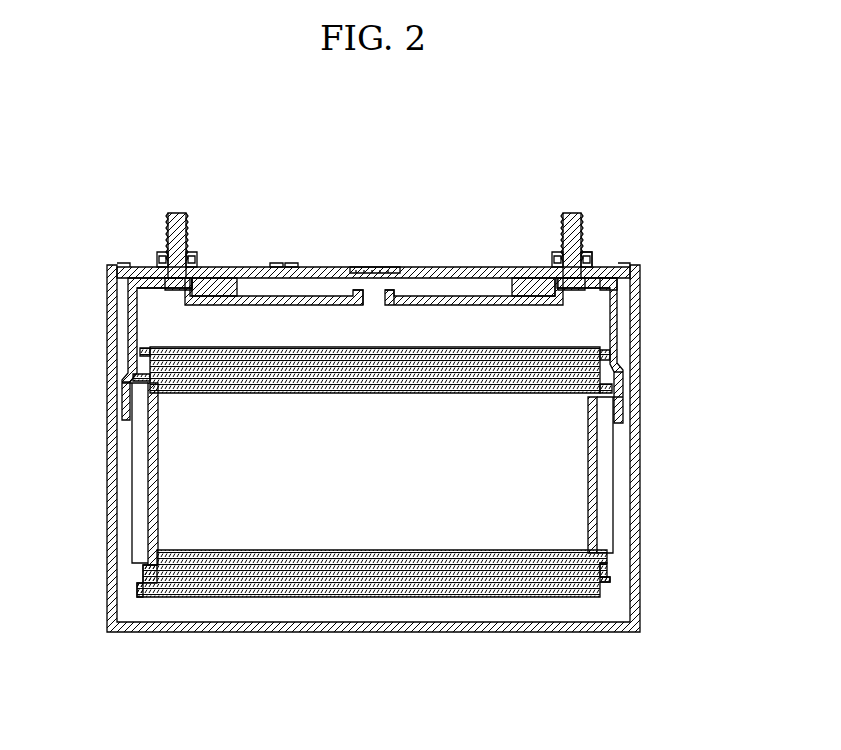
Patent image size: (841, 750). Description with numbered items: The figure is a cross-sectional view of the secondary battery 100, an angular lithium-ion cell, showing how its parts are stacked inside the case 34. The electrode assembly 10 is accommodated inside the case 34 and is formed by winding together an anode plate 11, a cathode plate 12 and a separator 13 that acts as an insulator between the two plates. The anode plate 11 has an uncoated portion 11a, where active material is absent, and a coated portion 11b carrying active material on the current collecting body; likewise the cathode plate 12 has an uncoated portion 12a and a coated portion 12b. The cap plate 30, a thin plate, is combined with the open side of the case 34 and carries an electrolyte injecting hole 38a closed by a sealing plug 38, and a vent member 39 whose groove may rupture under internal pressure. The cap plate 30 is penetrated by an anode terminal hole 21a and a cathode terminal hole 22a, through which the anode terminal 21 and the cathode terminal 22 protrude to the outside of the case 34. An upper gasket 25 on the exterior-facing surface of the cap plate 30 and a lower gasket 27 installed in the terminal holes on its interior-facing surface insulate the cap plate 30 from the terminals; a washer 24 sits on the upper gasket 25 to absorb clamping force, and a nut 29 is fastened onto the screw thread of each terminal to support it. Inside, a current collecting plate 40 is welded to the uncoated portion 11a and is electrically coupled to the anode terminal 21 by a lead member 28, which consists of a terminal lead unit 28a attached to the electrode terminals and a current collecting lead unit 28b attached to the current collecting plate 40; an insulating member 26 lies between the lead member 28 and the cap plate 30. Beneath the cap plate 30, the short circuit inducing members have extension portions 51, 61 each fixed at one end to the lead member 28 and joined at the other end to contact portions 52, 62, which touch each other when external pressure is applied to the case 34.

The secondary battery 100 is at (366, 139).
The electrode assembly 10 is at (377, 534).
The anode plate 11 is at (167, 643).
The uncoated portion 11a is at (140, 580).
The coated portion 11b is at (195, 597).
The cathode plate 12 is at (585, 642).
The uncoated portion 12a is at (608, 597).
The coated portion 12b is at (558, 597).
The separator 13 is at (332, 597).
The anode terminal 21 is at (177, 213).
The anode terminal hole 21a is at (192, 260).
The cathode terminal 22 is at (571, 213).
The cathode terminal hole 22a is at (558, 260).
The washer 24 is at (554, 260).
The upper gasket 25 is at (591, 258).
The insulating member 26 is at (231, 279).
The lower gasket 27 is at (533, 282).
The lead member 28 is at (130, 313).
The terminal lead unit 28a is at (180, 290).
The current collecting lead unit 28b is at (128, 362).
The nut 29 is at (160, 255).
The cap plate 30 is at (452, 267).
The case 34 is at (641, 440).
The sealing plug 38 is at (276, 264).
The electrolyte injecting hole 38a is at (292, 264).
The vent member 39 is at (367, 267).
The current collecting plate 40 is at (130, 500).
The extension portion 51 is at (283, 305).
The contact portion 52 is at (354, 293).
The extension portion 61 is at (462, 305).
The contact portion 62 is at (393, 293).